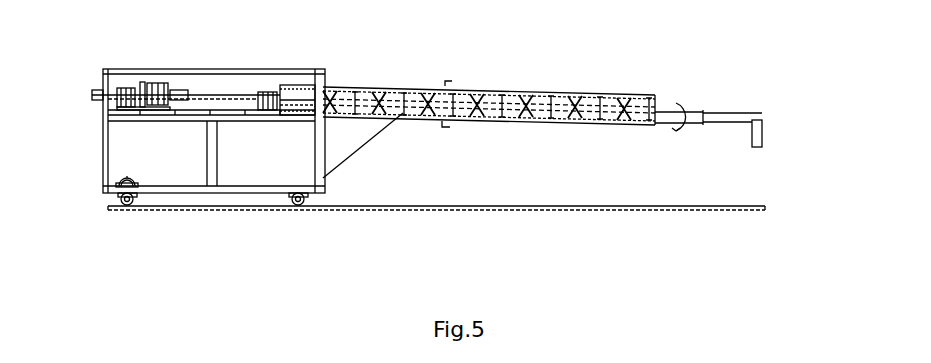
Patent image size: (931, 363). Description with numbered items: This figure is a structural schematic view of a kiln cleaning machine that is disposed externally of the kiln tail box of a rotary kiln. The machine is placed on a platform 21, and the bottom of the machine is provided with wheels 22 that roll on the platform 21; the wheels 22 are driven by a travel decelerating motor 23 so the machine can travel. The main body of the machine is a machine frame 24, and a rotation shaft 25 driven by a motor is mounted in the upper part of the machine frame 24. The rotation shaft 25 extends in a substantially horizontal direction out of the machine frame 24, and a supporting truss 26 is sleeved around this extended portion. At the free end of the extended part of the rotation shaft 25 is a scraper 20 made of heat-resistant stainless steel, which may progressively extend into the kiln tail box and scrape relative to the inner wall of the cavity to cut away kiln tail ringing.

The scraper 20 is at (762, 120).
The platform 21 is at (137, 208).
The wheel 22 is at (120, 199).
The travel decelerating motor 23 is at (122, 180).
The machine frame 24 is at (105, 138).
The rotation shaft 25 is at (228, 95).
The supporting truss 26 is at (398, 87).